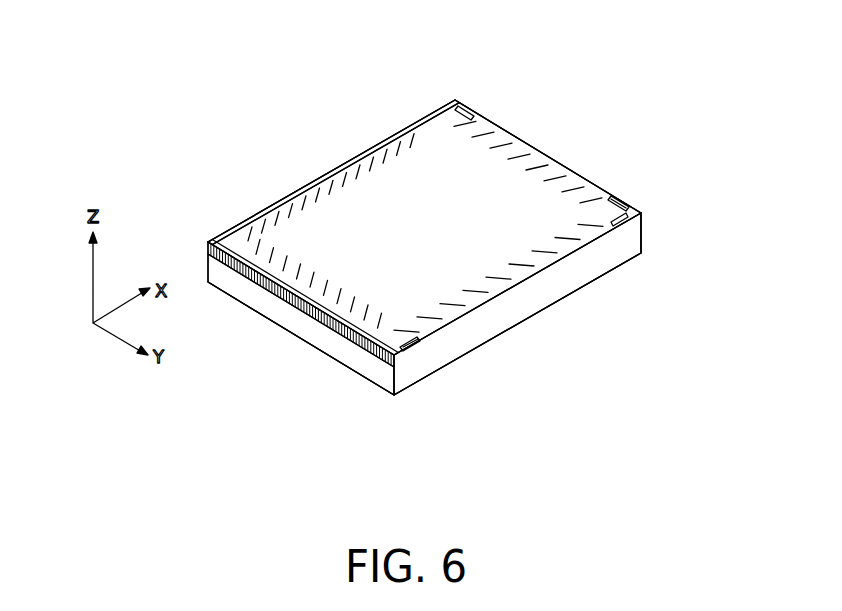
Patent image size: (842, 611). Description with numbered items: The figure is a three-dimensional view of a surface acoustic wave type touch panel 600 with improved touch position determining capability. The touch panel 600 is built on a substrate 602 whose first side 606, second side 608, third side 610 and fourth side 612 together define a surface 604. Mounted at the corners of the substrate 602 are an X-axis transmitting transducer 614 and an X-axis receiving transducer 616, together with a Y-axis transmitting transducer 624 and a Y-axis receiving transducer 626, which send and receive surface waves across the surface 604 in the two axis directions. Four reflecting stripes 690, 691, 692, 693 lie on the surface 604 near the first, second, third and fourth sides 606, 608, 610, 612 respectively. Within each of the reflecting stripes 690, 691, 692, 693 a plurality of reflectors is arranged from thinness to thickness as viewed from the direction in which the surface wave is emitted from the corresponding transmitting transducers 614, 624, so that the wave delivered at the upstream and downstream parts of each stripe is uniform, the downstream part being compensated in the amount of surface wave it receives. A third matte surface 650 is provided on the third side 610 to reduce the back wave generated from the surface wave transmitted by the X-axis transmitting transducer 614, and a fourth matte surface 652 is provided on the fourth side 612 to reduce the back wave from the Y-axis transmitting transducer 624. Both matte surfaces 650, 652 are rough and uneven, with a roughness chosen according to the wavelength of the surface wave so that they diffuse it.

The SAW type touch panel 600 is at (415, 485).
The substrate 602 is at (417, 382).
The surface 604 is at (428, 207).
The first side 606 is at (527, 307).
The second side 608 is at (548, 153).
The third side 610 is at (310, 184).
The fourth side 612 is at (281, 310).
The X-axis transmitting transducer 614 is at (418, 341).
The X-axis receiving transducer 616 is at (641, 215).
The Y-axis transmitting transducer 624 is at (467, 110).
The Y-axis receiving transducer 626 is at (618, 200).
The third matte surface 650 is at (347, 162).
The fourth matte surface 652 is at (318, 320).
The reflecting stripe 690 is at (498, 278).
The reflecting stripe 691 is at (528, 162).
The reflecting stripe 692 is at (338, 187).
The reflecting stripe 693 is at (319, 283).